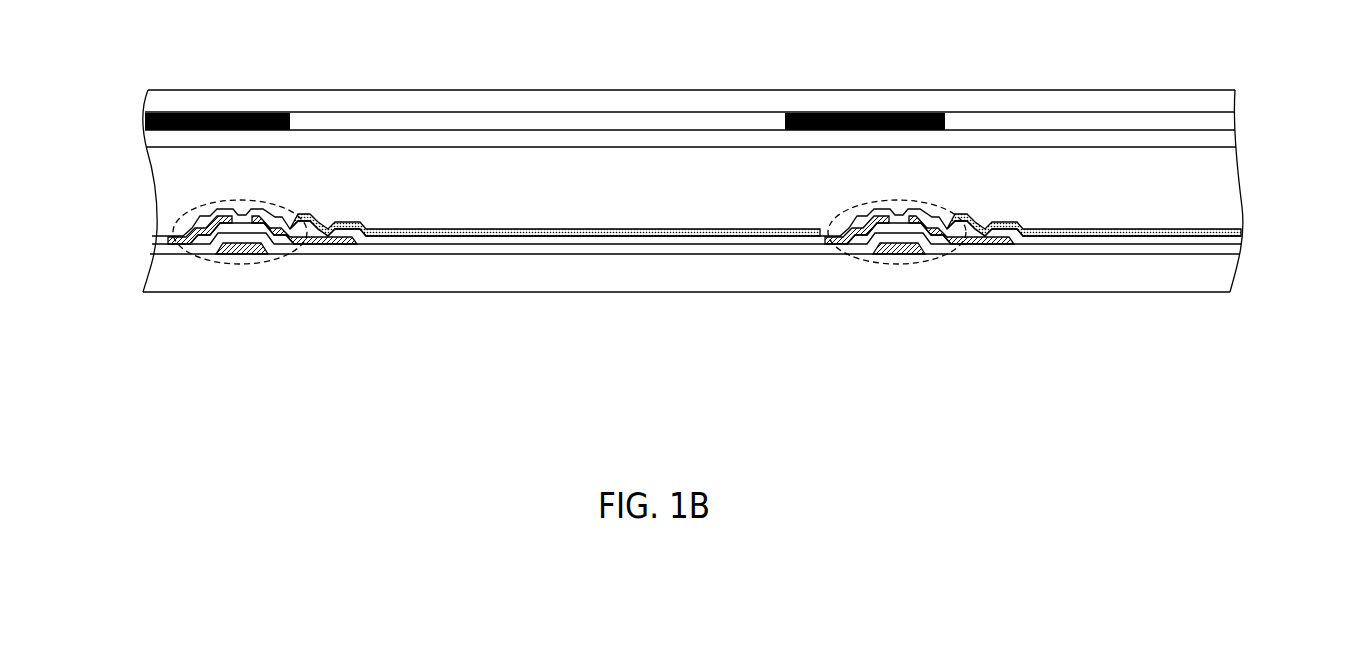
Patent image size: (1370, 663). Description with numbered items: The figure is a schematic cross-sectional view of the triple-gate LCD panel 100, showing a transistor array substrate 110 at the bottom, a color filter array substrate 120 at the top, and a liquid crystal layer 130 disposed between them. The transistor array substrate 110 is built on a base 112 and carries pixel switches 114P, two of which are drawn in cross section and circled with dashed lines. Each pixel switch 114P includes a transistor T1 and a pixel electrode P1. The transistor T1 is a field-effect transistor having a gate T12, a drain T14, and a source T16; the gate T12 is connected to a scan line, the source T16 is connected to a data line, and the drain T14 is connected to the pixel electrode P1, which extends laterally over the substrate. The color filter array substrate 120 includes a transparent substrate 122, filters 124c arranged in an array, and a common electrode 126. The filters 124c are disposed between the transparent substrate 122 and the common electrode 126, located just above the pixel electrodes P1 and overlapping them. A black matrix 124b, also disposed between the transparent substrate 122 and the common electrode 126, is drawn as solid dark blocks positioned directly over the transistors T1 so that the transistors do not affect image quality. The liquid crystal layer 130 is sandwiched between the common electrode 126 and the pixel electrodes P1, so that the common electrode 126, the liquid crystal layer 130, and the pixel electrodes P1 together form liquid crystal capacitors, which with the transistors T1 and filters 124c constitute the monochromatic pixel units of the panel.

The triple-gate LCD panel 100 is at (1132, 383).
The transistor array substrate 110 is at (747, 202).
The first base substrate 112 is at (1218, 277).
The pixel switch 114P is at (702, 202).
The color filter array substrate 120 is at (709, 87).
The transparent substrate 122 is at (1218, 101).
The black matrix 124b is at (148, 116).
The filter 124c is at (388, 120).
The common electrode 126 is at (1218, 140).
The liquid crystal layer 130 is at (158, 181).
The transistor T1 is at (275, 263).
The gate T12 is at (240, 254).
The drain T14 is at (322, 232).
The source T16 is at (182, 250).
The pixel electrode P1 is at (390, 237).